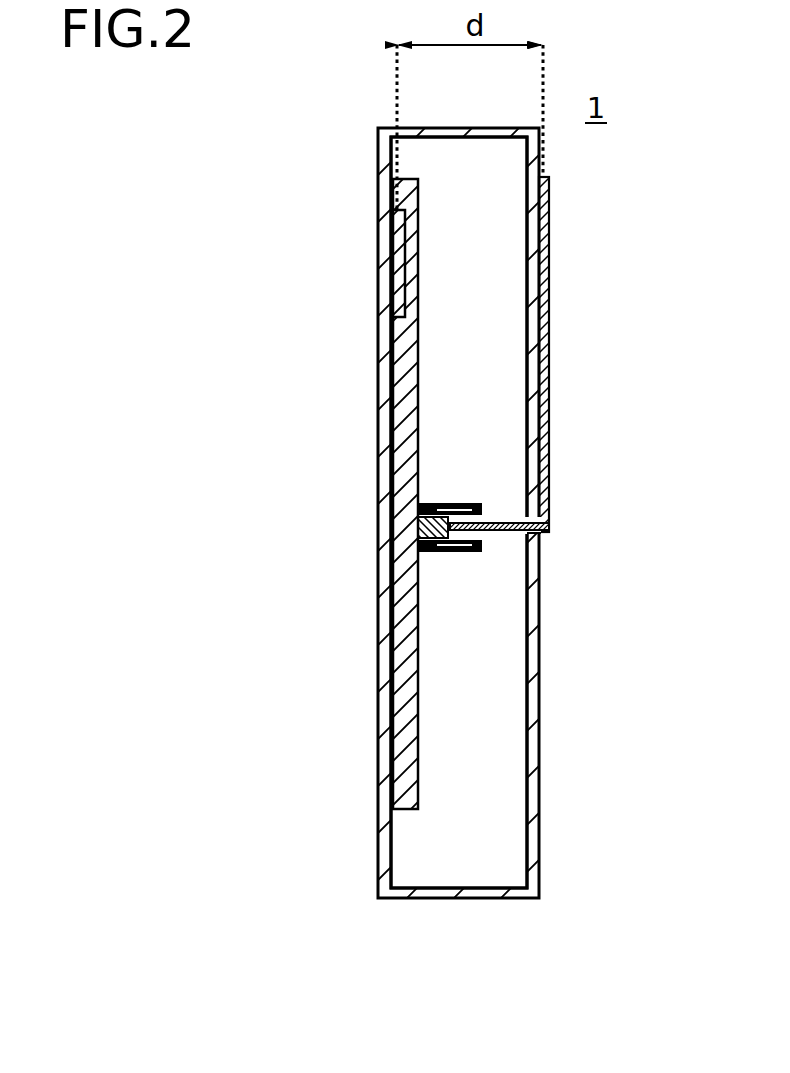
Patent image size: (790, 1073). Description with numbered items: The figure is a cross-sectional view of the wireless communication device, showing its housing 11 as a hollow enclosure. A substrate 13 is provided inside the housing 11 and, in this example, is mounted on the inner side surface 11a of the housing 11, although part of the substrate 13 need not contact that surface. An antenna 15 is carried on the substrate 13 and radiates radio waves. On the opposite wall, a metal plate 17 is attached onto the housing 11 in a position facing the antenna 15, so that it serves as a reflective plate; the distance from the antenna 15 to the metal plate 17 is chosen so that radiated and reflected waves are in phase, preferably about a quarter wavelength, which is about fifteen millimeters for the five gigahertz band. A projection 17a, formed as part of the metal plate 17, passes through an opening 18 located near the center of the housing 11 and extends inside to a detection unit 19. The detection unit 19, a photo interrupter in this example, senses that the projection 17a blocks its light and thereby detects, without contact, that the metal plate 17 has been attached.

The housing 11 is at (542, 820).
The inner side surface 11a is at (393, 838).
The substrate 13 is at (403, 770).
The antenna 15 is at (399, 262).
The metal plate 17 is at (550, 468).
The projection 17a is at (500, 532).
The opening 18 is at (543, 533).
The detection unit 19 is at (460, 503).